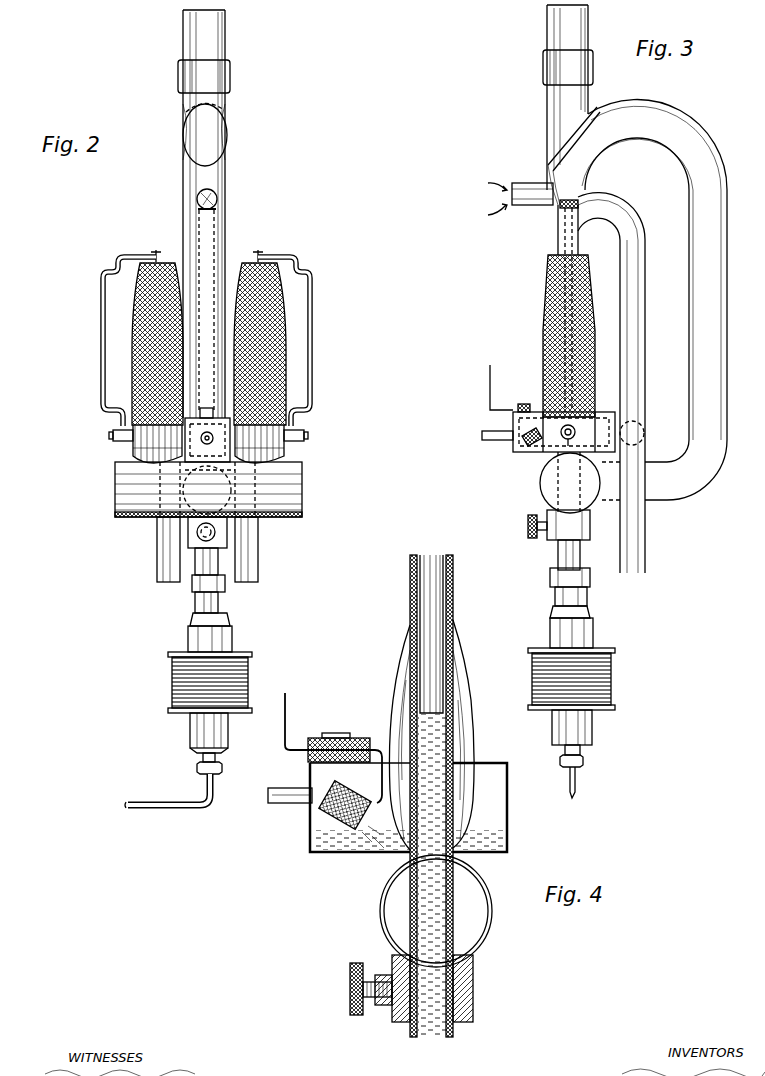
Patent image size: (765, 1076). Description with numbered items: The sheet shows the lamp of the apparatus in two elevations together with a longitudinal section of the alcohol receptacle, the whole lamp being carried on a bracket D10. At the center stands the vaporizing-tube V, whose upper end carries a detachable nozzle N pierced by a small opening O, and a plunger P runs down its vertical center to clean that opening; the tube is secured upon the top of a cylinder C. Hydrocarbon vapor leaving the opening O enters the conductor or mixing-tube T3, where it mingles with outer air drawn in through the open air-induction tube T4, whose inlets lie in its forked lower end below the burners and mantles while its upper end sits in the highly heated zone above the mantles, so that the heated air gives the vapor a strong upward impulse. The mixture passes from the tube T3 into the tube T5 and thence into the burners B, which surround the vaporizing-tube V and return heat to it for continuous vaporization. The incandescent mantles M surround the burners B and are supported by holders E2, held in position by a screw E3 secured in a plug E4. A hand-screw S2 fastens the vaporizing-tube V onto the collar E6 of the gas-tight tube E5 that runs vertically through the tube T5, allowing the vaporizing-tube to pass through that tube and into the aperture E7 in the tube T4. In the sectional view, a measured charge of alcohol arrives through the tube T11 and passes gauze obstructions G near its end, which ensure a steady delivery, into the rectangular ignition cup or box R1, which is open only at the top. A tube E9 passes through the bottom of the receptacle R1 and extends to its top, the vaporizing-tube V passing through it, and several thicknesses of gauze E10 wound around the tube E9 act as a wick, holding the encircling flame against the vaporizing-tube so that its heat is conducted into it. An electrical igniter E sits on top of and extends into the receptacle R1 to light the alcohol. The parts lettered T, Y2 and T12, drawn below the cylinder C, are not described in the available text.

In FIG. 2, the bracket D10 is at (218, 214).
In FIG. 3, the bracket D10 is at (553, 97).
In FIG. 2, the conductor or mixing tube T3 is at (224, 163).
In FIG. 3, the conductor or mixing tube T3 is at (709, 135).
In FIG. 2, the air-induction tube T4 is at (197, 196).
In FIG. 3, the air-induction tube T4 is at (540, 208).
In FIG. 2, the opening O is at (216, 198).
In FIG. 3, the opening O is at (580, 199).
In FIG. 2, the detachable nozzle N is at (199, 210).
In FIG. 3, the detachable nozzle N is at (562, 212).
In FIG. 2, the plunger P is at (203, 248).
In FIG. 3, the plunger P is at (568, 240).
In FIG. 2, the holder E2 is at (103, 275).
In FIG. 3, the holder E2 is at (548, 293).
In FIG. 2, the incandescent mantle M is at (132, 345).
In FIG. 3, the incandescent mantle M is at (558, 376).
In FIG. 2, the screw E3 is at (112, 437).
In FIG. 2, the burner B is at (302, 428).
In FIG. 3, the burner B is at (556, 446).
In FIG. 2, the electrical igniter E is at (107, 459).
In FIG. 3, the electrical igniter E is at (540, 410).
In FIG. 4, the electrical igniter E is at (380, 744).
In FIG. 2, the plug E4 is at (291, 448).
In FIG. 2, the ignition cup or box R1 is at (303, 491).
In FIG. 3, the ignition cup or box R1 is at (522, 440).
In FIG. 4, the ignition cup or box R1 is at (488, 786).
In FIG. 2, the tube T11 is at (190, 447).
In FIG. 3, the tube T11 is at (519, 423).
In FIG. 4, the tube T11 is at (279, 807).
In FIG. 2, the tube T5 is at (125, 518).
In FIG. 3, the tube T5 is at (542, 483).
In FIG. 4, the tube T5 is at (478, 886).
In FIG. 2, the collar E6 is at (188, 530).
In FIG. 3, the collar E6 is at (590, 536).
In FIG. 4, the collar E6 is at (474, 980).
In FIG. 2, the hand-screw S2 is at (228, 531).
In FIG. 3, the hand-screw S2 is at (528, 527).
In FIG. 4, the hand-screw S2 is at (359, 989).
In FIG. 2, the vaporizing-tube V is at (193, 568).
In FIG. 3, the vaporizing-tube V is at (548, 557).
In FIG. 4, the vaporizing-tube V is at (455, 590).
In FIG. 2, the coil T is at (172, 682).
In FIG. 3, the coil T is at (612, 692).
In FIG. 2, the flange Y2 is at (170, 713).
In FIG. 3, the flange Y2 is at (615, 707).
In FIG. 2, the cylinder C is at (228, 737).
In FIG. 3, the cylinder C is at (593, 735).
In FIG. 2, the nozzle tube T12 is at (167, 791).
In FIG. 3, the nozzle tube T12 is at (586, 782).
In FIG. 3, the aperture E7 is at (582, 207).
In FIG. 3, the gauze obstructions G is at (531, 446).
In FIG. 4, the gauze obstructions G is at (326, 823).
In FIG. 3, the gas-tight tube E5 is at (585, 496).
In FIG. 4, the gas-tight tube E5 is at (456, 922).
In FIG. 4, the tube E9 is at (465, 745).
In FIG. 4, the gauze E10 is at (482, 824).